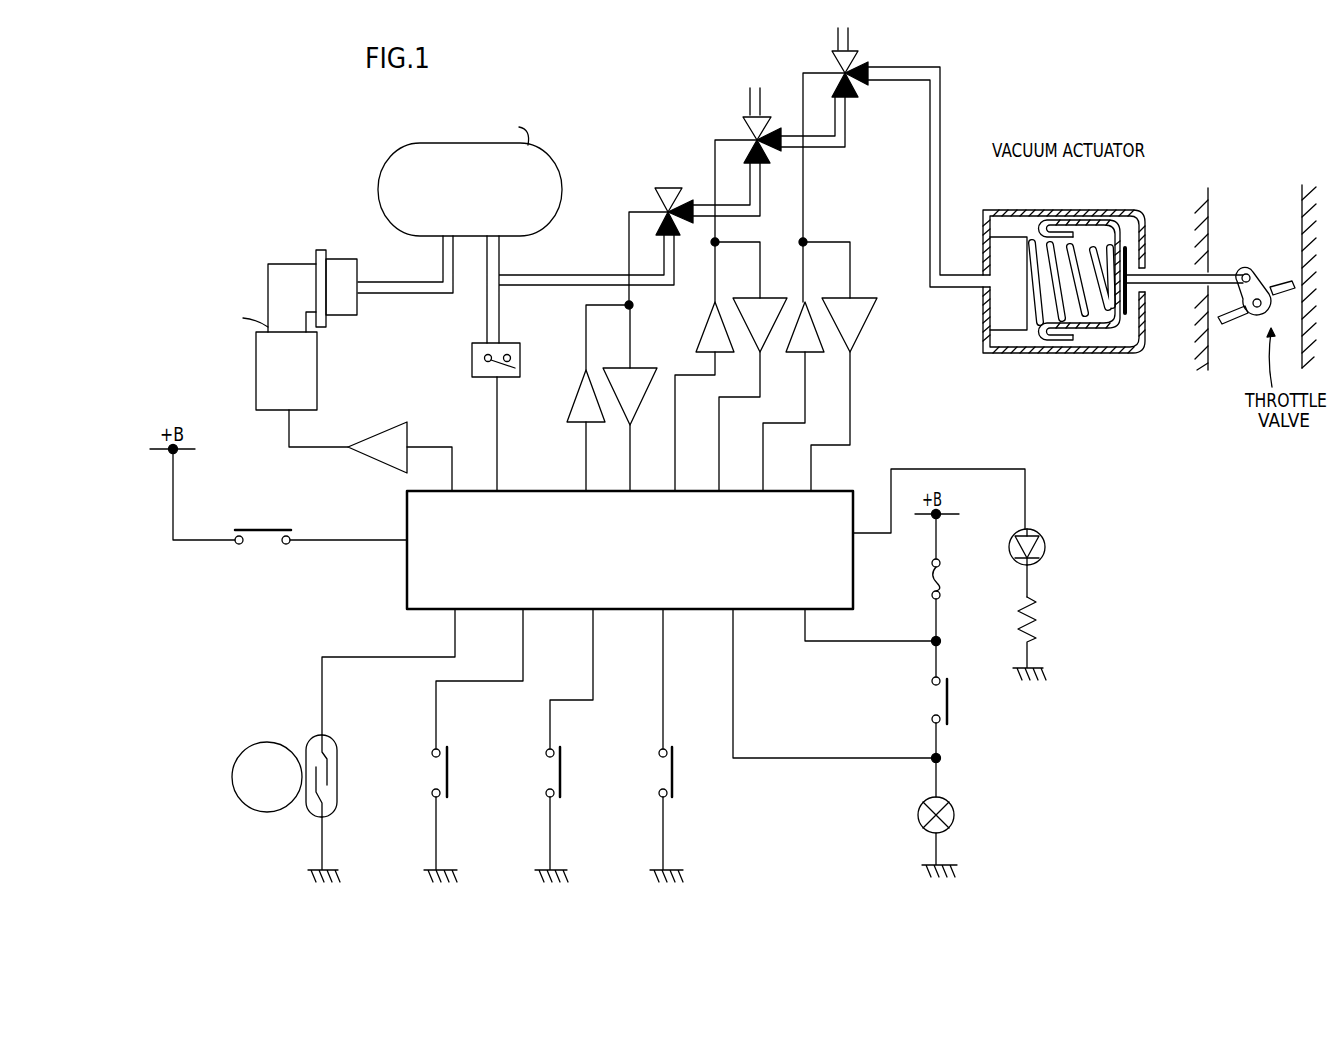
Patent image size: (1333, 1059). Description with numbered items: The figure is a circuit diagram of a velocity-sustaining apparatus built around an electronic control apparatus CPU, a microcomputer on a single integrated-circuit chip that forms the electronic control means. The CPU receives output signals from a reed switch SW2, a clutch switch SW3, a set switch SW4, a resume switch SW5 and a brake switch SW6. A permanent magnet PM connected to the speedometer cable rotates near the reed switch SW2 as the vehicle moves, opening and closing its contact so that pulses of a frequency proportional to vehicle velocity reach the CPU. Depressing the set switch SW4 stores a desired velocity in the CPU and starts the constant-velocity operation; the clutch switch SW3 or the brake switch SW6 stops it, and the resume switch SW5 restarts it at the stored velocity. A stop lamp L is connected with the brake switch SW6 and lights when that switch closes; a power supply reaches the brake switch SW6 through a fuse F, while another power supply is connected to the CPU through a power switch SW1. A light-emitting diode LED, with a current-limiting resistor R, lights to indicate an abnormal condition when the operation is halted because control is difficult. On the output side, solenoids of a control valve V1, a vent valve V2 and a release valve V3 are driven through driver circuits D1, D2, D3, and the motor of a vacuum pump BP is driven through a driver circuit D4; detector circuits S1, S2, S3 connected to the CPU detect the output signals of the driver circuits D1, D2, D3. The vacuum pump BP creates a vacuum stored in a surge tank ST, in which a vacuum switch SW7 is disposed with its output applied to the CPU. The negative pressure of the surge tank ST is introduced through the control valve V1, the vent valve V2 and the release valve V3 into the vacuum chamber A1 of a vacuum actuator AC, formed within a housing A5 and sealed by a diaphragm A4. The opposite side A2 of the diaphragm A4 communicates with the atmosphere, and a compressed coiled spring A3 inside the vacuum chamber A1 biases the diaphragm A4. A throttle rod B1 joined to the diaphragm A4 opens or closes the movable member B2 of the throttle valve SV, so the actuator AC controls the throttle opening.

The surge tank ST is at (473, 195).
The vacuum pump BP is at (296, 373).
The vacuum switch SW7 is at (470, 370).
The control valve V1 is at (672, 207).
The vent valve V2 is at (761, 135).
The release valve V3 is at (849, 68).
The driver circuit D1 is at (566, 421).
The driver circuit D2 is at (693, 345).
The driver circuit D3 is at (832, 353).
The driver circuit D4 is at (393, 429).
The detector circuit S1 is at (656, 380).
The detector circuit S2 is at (787, 302).
The detector circuit S3 is at (877, 302).
The electronic control apparatus CPU is at (640, 582).
The power switch SW1 is at (246, 513).
The reed switch SW2 is at (337, 796).
The clutch switch SW3 is at (445, 793).
The set switch SW4 is at (558, 793).
The resume switch SW5 is at (670, 793).
The brake switch SW6 is at (943, 715).
The permanent magnet PM is at (286, 742).
The fuse F is at (941, 574).
The light-emitting diode LED is at (1041, 562).
The current-limiting resistor R is at (1030, 628).
The stop lamp L is at (946, 830).
The vacuum actuator AC is at (1031, 358).
The vacuum chamber A1 is at (1030, 226).
The opposite side of the diaphragm A2 is at (1124, 231).
The compressed coiled spring A3 is at (1067, 255).
The diaphragm A4 is at (1091, 326).
The housing A5 is at (1139, 347).
The throttle rod B1 is at (1162, 275).
The movable member B2 is at (1287, 283).
The throttle valve SV is at (1232, 347).